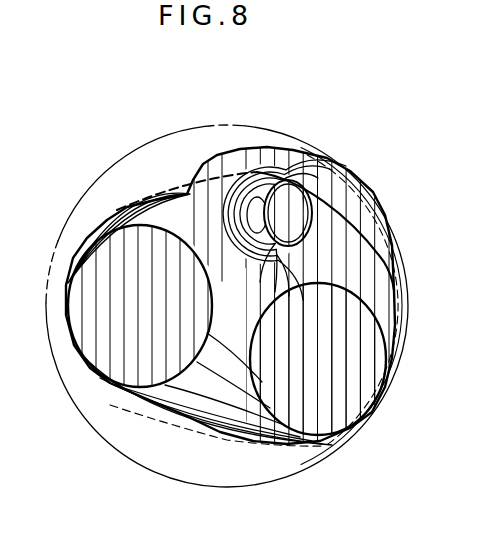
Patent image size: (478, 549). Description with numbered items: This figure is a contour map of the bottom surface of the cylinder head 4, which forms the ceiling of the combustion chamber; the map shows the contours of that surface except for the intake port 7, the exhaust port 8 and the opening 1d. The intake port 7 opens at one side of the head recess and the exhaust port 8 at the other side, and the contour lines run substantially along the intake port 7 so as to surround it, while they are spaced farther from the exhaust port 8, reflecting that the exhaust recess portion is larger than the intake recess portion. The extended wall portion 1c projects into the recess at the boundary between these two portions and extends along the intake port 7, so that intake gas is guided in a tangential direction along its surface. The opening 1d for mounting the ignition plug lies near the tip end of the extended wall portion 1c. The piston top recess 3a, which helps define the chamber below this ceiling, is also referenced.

The extended wall portion 1c is at (182, 219).
The opening 1d is at (292, 212).
The recess 3a is at (228, 442).
The cylinder head 4 is at (410, 171).
The intake port 7 is at (104, 358).
The exhaust port 8 is at (348, 389).